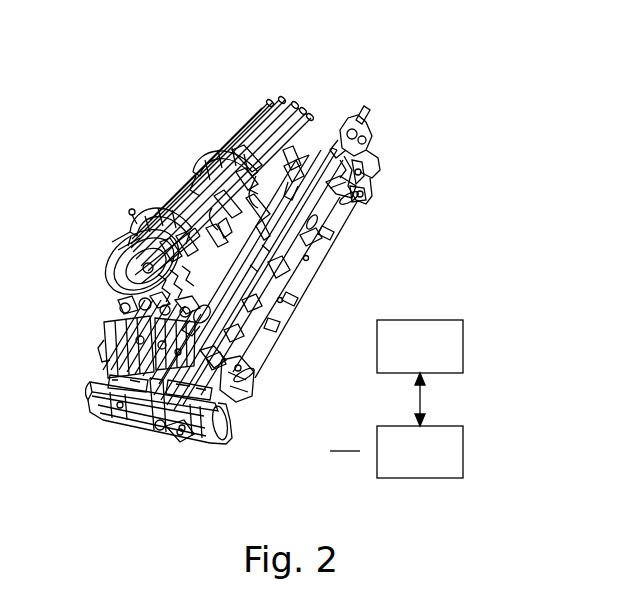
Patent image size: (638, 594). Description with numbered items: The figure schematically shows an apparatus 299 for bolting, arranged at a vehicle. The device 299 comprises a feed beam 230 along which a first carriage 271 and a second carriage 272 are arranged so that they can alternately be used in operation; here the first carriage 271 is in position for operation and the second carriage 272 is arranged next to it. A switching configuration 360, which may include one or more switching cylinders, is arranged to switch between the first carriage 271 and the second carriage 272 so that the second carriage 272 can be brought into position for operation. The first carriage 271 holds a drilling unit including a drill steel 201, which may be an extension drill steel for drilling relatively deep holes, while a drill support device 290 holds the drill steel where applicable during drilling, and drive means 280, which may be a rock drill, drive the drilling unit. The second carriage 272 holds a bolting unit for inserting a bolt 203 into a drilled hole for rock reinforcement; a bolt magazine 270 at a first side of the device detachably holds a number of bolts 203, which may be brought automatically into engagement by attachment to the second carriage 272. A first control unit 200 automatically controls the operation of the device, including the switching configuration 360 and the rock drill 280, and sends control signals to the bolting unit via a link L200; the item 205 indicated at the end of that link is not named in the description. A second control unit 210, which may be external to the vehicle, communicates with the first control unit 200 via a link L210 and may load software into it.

The apparatus for bolting 299 is at (323, 79).
The bolt magazine 270 is at (232, 146).
The drill support device 290 is at (347, 130).
The bolt 203 is at (187, 174).
The drill steel 201 is at (303, 171).
The feed beam 230 is at (315, 223).
The drive means 280 is at (195, 315).
The second carriage 272 is at (122, 345).
The end fitting / port 205 is at (376, 451).
The first carriage 271 is at (128, 420).
The switching configuration 360 is at (177, 431).
The second control unit 210 is at (420, 346).
The first control unit 200 is at (420, 452).
The link L210 is at (420, 400).
The link L200 is at (313, 452).